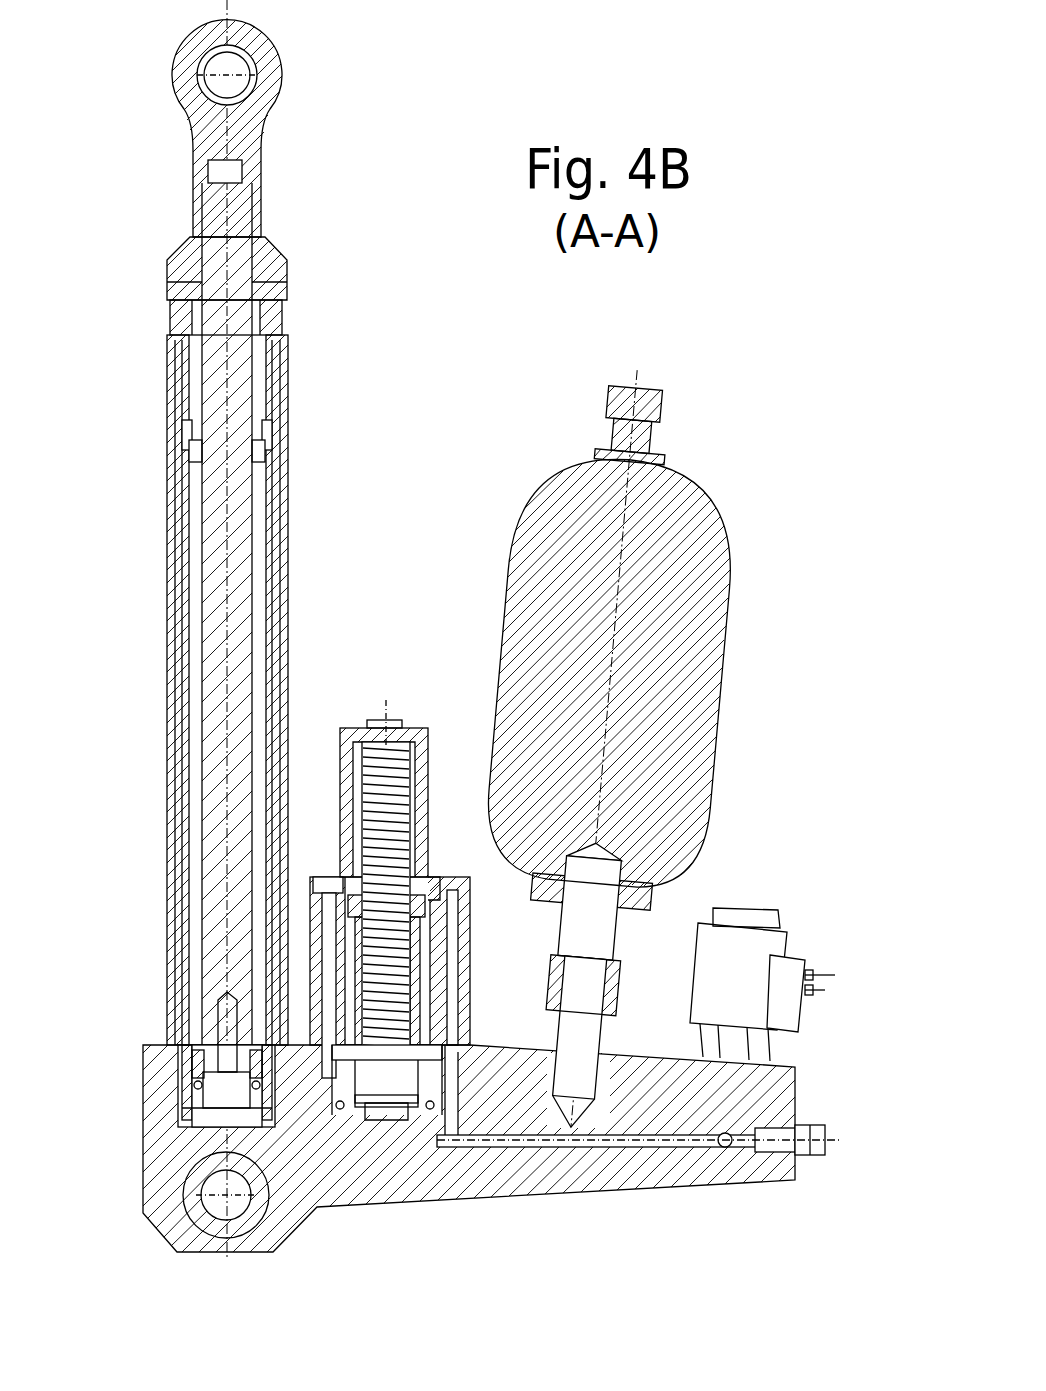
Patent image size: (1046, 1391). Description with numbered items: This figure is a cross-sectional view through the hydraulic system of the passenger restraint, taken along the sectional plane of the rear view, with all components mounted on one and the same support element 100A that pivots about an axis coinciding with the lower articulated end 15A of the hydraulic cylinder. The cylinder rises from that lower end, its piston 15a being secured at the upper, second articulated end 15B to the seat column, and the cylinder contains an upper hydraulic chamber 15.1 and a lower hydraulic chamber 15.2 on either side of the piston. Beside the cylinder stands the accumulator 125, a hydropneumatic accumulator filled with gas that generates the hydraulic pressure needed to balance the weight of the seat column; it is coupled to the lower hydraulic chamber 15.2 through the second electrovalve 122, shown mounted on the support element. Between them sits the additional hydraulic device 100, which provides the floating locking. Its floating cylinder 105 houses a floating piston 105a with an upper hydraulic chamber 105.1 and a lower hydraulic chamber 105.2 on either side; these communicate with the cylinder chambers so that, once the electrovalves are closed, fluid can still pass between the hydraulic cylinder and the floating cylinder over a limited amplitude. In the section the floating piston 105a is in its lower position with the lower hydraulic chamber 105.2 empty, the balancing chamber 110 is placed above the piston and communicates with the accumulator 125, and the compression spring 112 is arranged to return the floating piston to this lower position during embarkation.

The second articulated end 15B is at (265, 47).
The piston 15a is at (240, 355).
The upper hydraulic chamber 15.1 is at (195, 543).
The lower hydraulic chamber 15.2 is at (205, 1117).
The first articulated end 15A is at (177, 1250).
The hydraulic device 100 is at (419, 891).
The support element 100A is at (560, 1183).
The floating cylinder 105 is at (443, 993).
The upper hydraulic chamber 105.1 is at (425, 963).
The lower hydraulic chamber 105.2 is at (405, 1125).
The floating piston 105a is at (375, 1120).
The balancing chamber 110 is at (410, 790).
The compression spring 112 is at (376, 743).
The second electrovalve 122 is at (783, 940).
The accumulator 125 is at (700, 504).